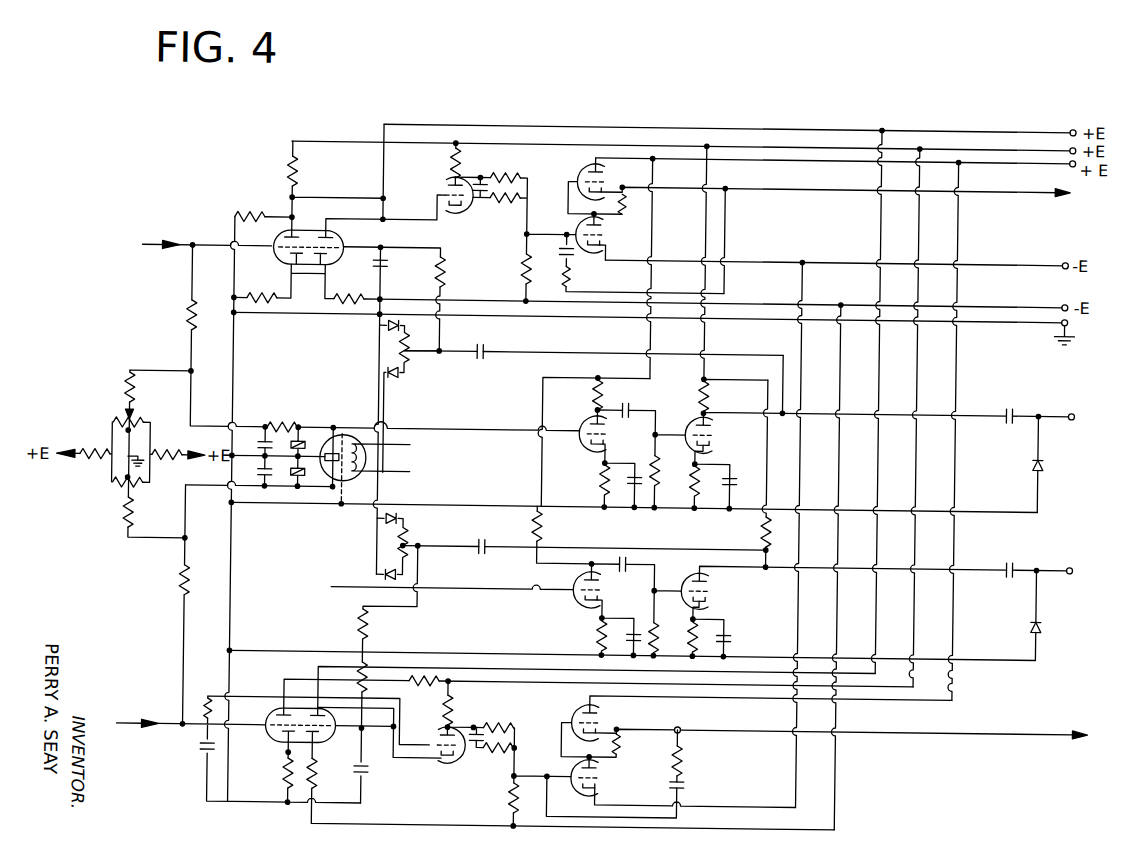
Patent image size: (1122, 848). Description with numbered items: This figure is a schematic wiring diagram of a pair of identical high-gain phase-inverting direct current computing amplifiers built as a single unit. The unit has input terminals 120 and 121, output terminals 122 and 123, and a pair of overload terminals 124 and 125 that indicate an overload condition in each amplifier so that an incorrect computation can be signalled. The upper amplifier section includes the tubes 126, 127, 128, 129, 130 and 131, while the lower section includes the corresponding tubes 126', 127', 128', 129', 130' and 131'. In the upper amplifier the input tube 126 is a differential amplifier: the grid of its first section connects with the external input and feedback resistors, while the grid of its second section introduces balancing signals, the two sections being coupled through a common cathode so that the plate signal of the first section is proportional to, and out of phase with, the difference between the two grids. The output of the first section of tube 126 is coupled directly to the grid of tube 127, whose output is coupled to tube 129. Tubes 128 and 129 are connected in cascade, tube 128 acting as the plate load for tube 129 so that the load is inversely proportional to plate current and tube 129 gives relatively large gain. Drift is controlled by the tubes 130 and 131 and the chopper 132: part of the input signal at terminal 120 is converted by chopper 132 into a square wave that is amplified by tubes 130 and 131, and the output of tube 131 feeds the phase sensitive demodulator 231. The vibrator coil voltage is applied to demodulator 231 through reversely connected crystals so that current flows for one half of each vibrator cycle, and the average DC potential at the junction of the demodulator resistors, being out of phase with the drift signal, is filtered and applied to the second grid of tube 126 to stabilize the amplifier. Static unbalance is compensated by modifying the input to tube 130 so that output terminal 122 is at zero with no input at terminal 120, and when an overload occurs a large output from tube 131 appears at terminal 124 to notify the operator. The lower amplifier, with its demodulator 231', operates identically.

The input terminal 120 is at (190, 245).
The input terminal 121 is at (130, 716).
The output terminal 122 is at (1080, 194).
The output terminal 123 is at (1097, 736).
The overload terminal 124 is at (1089, 418).
The overload terminal 125 is at (1086, 571).
The input tube 126 is at (308, 232).
The input tube 126' is at (282, 734).
The tube 127 is at (460, 193).
The tube 127' is at (459, 759).
The tube 128 is at (572, 176).
The tube 128' is at (558, 776).
The tube 129 is at (605, 252).
The tube 129' is at (561, 717).
The tube 130 is at (576, 448).
The tube 130' is at (568, 596).
The tube 131 is at (721, 435).
The tube 131' is at (723, 591).
The chopper 132 is at (350, 440).
The phase sensitive demodulator 231 is at (386, 396).
The phase sensitive demodulator 231' is at (370, 546).